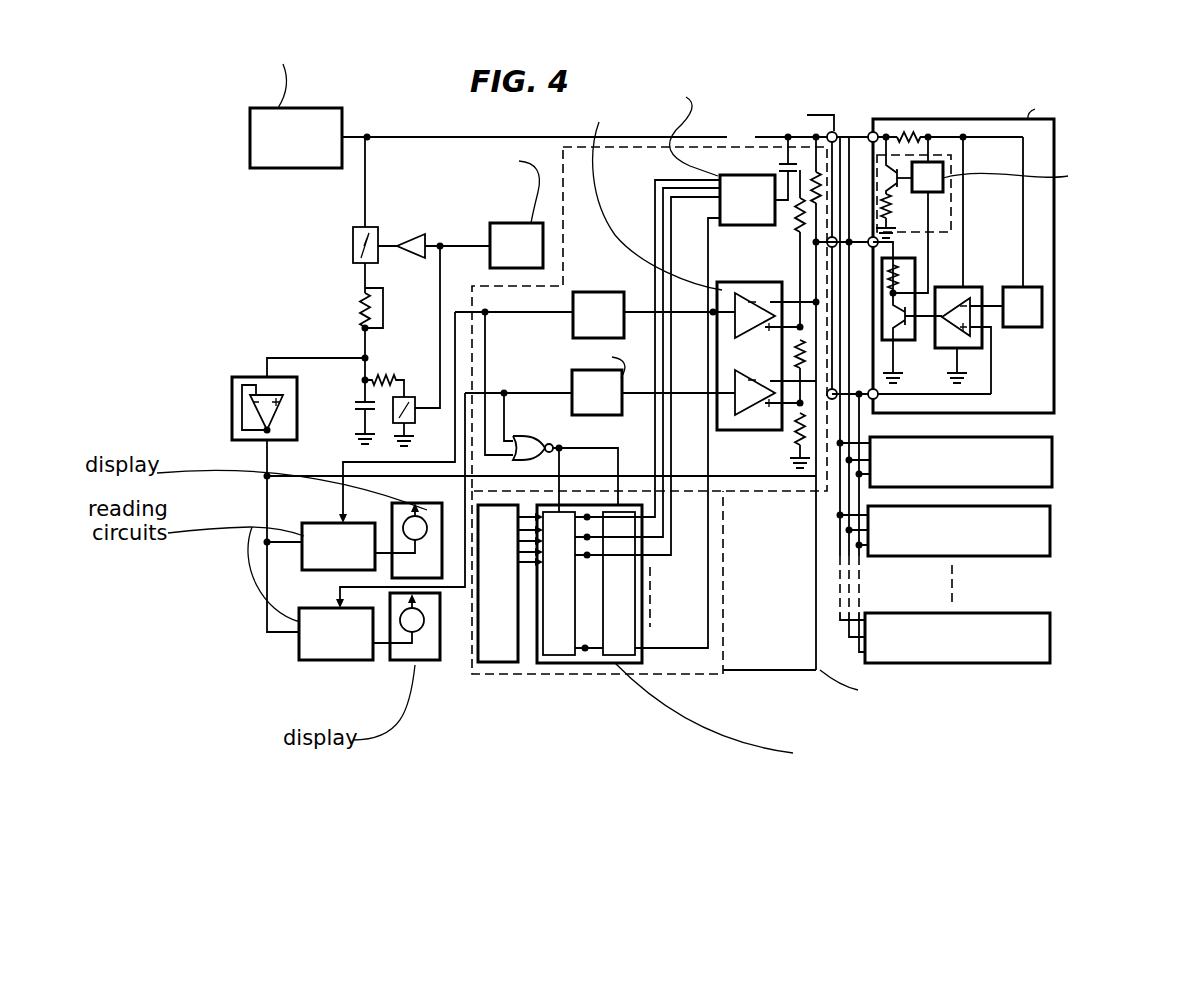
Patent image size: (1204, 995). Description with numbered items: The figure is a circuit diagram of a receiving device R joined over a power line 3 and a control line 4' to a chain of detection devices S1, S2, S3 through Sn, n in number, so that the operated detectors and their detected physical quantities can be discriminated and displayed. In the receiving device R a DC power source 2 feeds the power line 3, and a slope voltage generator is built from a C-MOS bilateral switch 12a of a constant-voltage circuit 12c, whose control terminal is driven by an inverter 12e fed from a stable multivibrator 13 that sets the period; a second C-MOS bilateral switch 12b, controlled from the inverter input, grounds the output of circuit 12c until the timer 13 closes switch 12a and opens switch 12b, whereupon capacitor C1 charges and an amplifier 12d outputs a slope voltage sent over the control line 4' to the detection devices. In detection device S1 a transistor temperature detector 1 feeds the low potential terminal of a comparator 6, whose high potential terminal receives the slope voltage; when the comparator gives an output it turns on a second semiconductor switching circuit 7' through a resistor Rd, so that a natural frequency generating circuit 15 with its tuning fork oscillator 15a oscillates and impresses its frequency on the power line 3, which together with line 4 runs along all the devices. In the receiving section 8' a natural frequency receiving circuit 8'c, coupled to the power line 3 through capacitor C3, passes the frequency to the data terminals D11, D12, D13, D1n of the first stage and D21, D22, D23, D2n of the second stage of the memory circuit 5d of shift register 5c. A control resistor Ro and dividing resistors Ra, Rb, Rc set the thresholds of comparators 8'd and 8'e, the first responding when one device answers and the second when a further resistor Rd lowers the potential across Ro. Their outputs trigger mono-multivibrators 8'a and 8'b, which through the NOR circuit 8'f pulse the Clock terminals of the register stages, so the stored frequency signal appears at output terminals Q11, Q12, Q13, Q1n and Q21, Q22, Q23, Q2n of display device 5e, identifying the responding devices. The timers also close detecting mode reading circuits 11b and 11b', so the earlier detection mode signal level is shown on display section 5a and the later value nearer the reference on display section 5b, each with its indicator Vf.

The DC power source 2 is at (310, 108).
The C-MOS bilateral switch 12a is at (352, 237).
The inverter 12e is at (414, 236).
The stable multivibrator 13 is at (511, 223).
The constant-voltage circuit 12c is at (384, 318).
The amplifier 12d is at (297, 406).
The capacitor C1 is at (357, 401).
The C-MOS bilateral switch 12b is at (412, 397).
The display section 5a is at (436, 476).
The receiver and comparator unit 8' is at (649, 289).
The mono-multivibrator 8'a is at (595, 295).
The mono-multivibrator 8'b is at (600, 396).
The NOR circuit 8'f is at (551, 412).
The natural frequency receiving circuit 8'c is at (680, 365).
The capacitor C3 is at (787, 161).
The control resistor Ro is at (816, 168).
The receiving device R is at (826, 114).
The dividing resistor Ra is at (800, 244).
The dividing resistor Rb is at (799, 353).
The dividing resistor Rc is at (797, 446).
The comparator 8'd is at (639, 265).
The comparator 8'e is at (765, 415).
The power line 3 is at (843, 162).
The signal line 4 is at (835, 387).
The control line 4' is at (881, 523).
The detection device S1 is at (955, 119).
The natural frequency generating circuit 15 is at (952, 163).
The tuning fork oscillator 15a is at (941, 193).
The second semiconductor switching circuit 7' is at (929, 304).
The resistor Rd is at (899, 273).
The comparator 6 is at (975, 287).
The transistor temperature detector 1 is at (1023, 327).
The detection device S2 is at (961, 462).
The detection device S3 is at (959, 531).
The detection device Sn is at (957, 638).
The detecting mode reading circuit 11b is at (323, 535).
The detecting mode reading circuit 11b' is at (321, 623).
The display Vf is at (403, 597).
The display section 5b is at (404, 663).
The display device 5e is at (489, 664).
The shift register 5c is at (660, 664).
The memory circuit 5d is at (645, 659).
The number of stages n is at (660, 597).
The clock terminal Clock is at (583, 494).
The output terminal Q11 is at (640, 548).
The data terminal D11 is at (640, 532).
The output terminal Q12 is at (640, 562).
The data terminal D12 is at (640, 551).
The output terminal Q13 is at (640, 592).
The data terminal D13 is at (640, 576).
The data terminal D23 is at (640, 621).
The output terminal Q21 is at (530, 663).
The output terminal Q22 is at (537, 663).
The output terminal Q23 is at (552, 663).
The output terminal Q2n is at (560, 663).
The data terminal D21 is at (566, 663).
The data terminal D22 is at (592, 663).
The data terminal D2n is at (602, 663).
The output terminal Q1n is at (626, 663).
The data terminal D1n is at (641, 663).